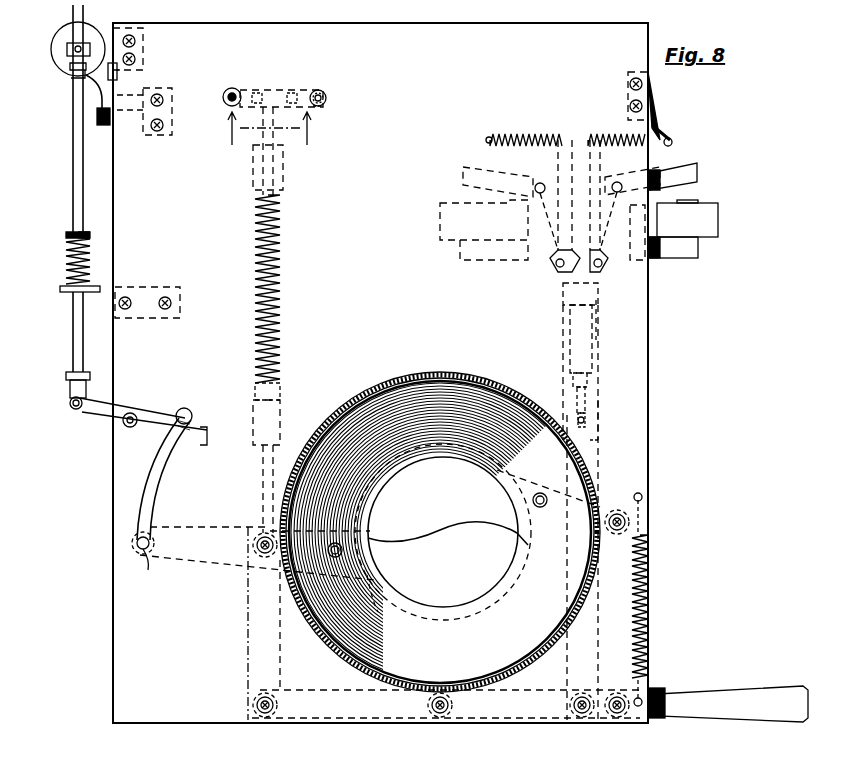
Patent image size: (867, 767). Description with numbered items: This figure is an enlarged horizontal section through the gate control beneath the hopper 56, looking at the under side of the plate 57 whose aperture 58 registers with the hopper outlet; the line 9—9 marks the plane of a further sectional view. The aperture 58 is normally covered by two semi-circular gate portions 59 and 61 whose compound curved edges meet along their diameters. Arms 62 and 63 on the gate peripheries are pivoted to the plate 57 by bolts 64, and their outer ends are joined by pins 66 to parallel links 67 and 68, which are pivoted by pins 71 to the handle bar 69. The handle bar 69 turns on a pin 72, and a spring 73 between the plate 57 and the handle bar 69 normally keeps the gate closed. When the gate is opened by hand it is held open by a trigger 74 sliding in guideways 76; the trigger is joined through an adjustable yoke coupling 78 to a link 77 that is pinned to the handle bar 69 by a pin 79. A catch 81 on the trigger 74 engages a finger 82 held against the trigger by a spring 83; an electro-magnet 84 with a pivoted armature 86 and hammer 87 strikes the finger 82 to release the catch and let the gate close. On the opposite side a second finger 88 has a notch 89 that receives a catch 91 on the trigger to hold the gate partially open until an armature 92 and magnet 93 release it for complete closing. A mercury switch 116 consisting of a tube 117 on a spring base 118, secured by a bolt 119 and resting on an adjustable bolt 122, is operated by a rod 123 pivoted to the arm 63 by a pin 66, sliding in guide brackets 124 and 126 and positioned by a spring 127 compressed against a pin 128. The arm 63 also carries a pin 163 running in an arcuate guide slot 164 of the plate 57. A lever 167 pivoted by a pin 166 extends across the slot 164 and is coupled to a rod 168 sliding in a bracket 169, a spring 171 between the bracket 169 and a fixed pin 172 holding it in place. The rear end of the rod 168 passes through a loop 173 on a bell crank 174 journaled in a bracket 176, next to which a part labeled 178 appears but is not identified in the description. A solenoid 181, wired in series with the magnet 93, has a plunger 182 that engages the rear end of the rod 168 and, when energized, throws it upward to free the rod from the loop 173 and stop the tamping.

The section line 9 is at (269, 128).
The hopper 56 is at (462, 372).
The plate 57 is at (408, 281).
The aperture 58 is at (478, 468).
The gate portion 59 is at (442, 519).
The gate portion 61 is at (487, 556).
The arm 62 is at (538, 490).
The arm 63 is at (372, 612).
The bolts 64 is at (345, 552).
The pins 66 is at (253, 547).
The link 67 is at (612, 649).
The link 68 is at (255, 614).
The handle bar 69 is at (710, 720).
The pins 71 is at (265, 718).
The pin 72 is at (442, 718).
The spring 73 is at (652, 582).
The trigger 74 is at (575, 346).
The guideways 76 is at (565, 382).
The link 77 is at (598, 443).
The yoke coupling 78 is at (590, 404).
The pin 79 is at (582, 718).
The catch 81 is at (570, 323).
The finger 82 is at (562, 295).
The spring 83 is at (532, 136).
The electro-magnet 84 is at (448, 220).
The armature 86 is at (463, 178).
The hammer 87 is at (552, 238).
The finger 88 is at (603, 293).
The notch 89 is at (600, 333).
The catch 91 is at (598, 318).
The armature 92 is at (697, 174).
The magnet 93 is at (718, 220).
The mercury switch 116 is at (276, 86).
The mercury containing tube 117 is at (316, 90).
The spring base 118 is at (326, 108).
The bolt 119 is at (236, 90).
The adjustable bolt 122 is at (328, 97).
The rod 123 is at (262, 469).
The guide bracket 124 is at (283, 170).
The guide bracket 126 is at (281, 420).
The spring 127 is at (282, 260).
The pin 128 is at (282, 388).
The pin 163 is at (253, 557).
The arcuate guide slot 164 is at (148, 497).
The pin 166 is at (135, 413).
The lever 167 is at (92, 400).
The rod 168 is at (72, 185).
The bracket 169 is at (100, 289).
The spring 171 is at (64, 270).
The pin 172 is at (66, 232).
The loop 173 is at (72, 80).
The bell crank 174 is at (117, 76).
The bracket 176 is at (174, 95).
The plate 178 is at (143, 65).
The solenoid 181 is at (68, 32).
The plunger 182 is at (67, 47).